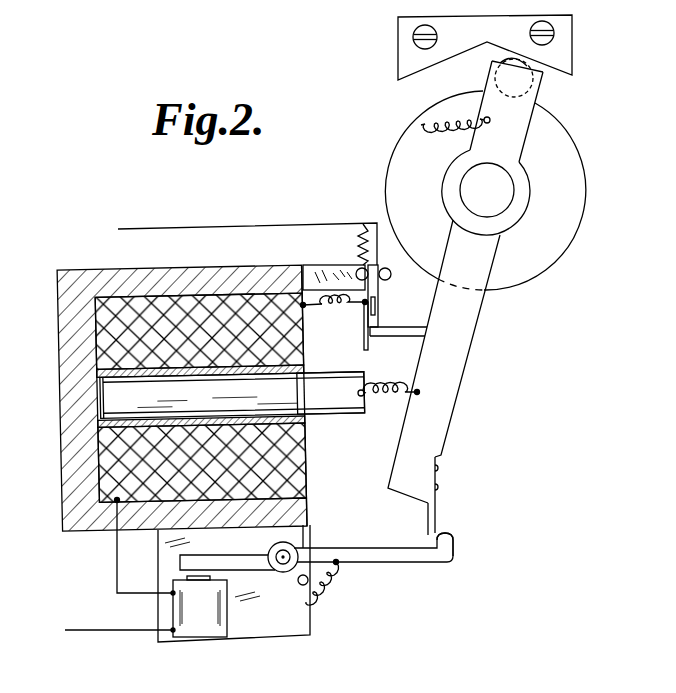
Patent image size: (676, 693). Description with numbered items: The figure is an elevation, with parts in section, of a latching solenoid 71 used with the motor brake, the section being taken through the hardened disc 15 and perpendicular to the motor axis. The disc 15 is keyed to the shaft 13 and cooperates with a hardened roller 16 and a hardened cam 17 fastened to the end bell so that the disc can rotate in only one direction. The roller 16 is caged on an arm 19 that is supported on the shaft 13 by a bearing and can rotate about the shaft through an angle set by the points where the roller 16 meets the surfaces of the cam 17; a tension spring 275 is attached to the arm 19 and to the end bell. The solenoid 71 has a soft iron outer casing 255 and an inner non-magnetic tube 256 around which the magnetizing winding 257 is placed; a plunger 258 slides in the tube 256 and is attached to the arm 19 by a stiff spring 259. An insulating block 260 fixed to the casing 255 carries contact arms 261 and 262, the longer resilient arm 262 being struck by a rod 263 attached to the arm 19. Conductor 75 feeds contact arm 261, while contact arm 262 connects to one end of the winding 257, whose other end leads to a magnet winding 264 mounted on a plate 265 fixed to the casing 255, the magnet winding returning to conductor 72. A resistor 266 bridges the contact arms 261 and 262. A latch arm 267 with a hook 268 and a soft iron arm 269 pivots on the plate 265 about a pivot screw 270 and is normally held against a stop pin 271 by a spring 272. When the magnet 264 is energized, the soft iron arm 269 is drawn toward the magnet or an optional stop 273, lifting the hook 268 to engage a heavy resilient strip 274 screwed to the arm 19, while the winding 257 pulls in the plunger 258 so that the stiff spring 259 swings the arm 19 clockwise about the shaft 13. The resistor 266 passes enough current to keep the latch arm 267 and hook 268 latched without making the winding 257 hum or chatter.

The shaft 13 is at (513, 190).
The disc 15 is at (578, 147).
The roller 16 is at (511, 54).
The cam 17 is at (573, 43).
The arm 19 is at (482, 318).
The solenoid 71 is at (85, 543).
The conductor 72 is at (100, 633).
The conductor 75 is at (212, 225).
The outer casing 255 is at (117, 268).
The tube 256 is at (110, 380).
The magnetizing winding 257 is at (307, 472).
The plunger 258 is at (327, 403).
The stiff spring 259 is at (388, 383).
The insulating block 260 is at (317, 266).
The contact arm 261 is at (380, 313).
The contact arm 262 is at (366, 343).
The rod 263 is at (387, 327).
The magnet winding 264 is at (210, 638).
The plate 265 is at (295, 637).
The resistor 266 is at (360, 240).
The latch arm 267 is at (408, 563).
The hook 268 is at (455, 543).
The soft iron arm 269 is at (222, 563).
The pivot screw 270 is at (275, 552).
The stop pin 271 is at (300, 587).
The spring 272 is at (327, 583).
The stop 273 is at (312, 535).
The resilient strip 274 is at (436, 516).
The tension spring 275 is at (455, 130).